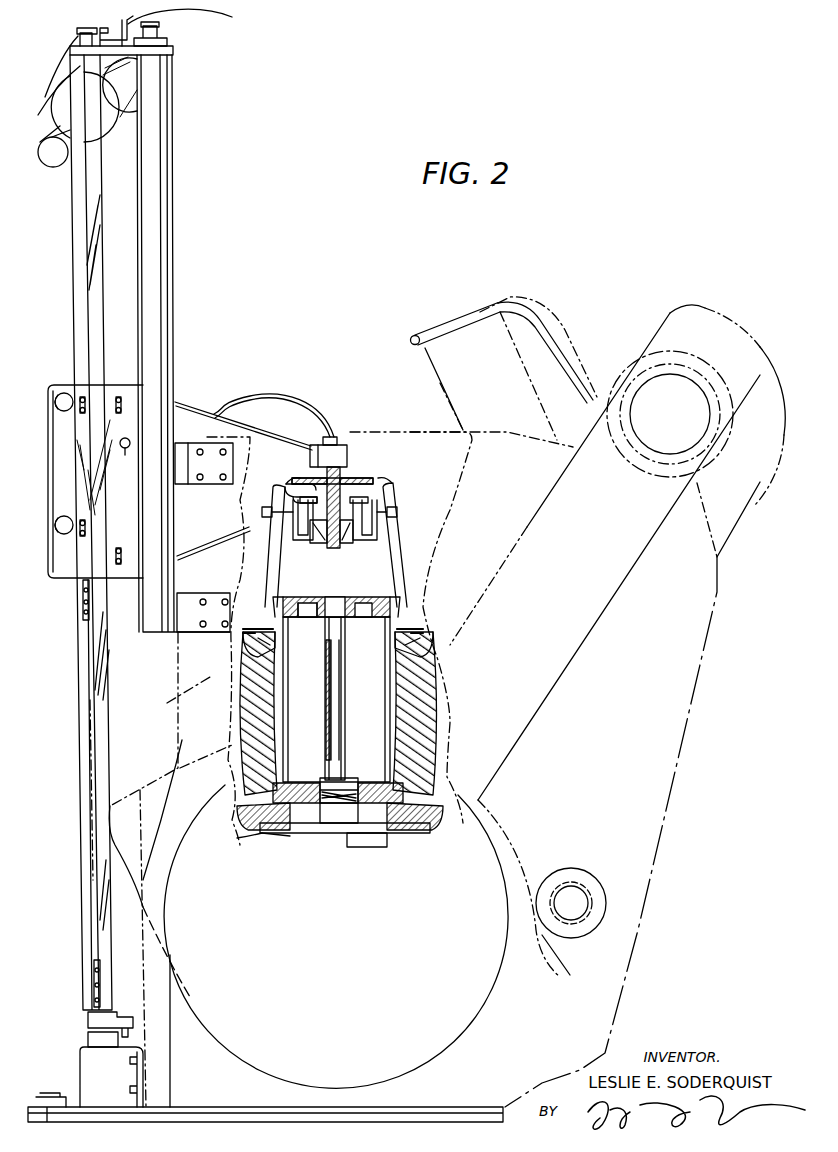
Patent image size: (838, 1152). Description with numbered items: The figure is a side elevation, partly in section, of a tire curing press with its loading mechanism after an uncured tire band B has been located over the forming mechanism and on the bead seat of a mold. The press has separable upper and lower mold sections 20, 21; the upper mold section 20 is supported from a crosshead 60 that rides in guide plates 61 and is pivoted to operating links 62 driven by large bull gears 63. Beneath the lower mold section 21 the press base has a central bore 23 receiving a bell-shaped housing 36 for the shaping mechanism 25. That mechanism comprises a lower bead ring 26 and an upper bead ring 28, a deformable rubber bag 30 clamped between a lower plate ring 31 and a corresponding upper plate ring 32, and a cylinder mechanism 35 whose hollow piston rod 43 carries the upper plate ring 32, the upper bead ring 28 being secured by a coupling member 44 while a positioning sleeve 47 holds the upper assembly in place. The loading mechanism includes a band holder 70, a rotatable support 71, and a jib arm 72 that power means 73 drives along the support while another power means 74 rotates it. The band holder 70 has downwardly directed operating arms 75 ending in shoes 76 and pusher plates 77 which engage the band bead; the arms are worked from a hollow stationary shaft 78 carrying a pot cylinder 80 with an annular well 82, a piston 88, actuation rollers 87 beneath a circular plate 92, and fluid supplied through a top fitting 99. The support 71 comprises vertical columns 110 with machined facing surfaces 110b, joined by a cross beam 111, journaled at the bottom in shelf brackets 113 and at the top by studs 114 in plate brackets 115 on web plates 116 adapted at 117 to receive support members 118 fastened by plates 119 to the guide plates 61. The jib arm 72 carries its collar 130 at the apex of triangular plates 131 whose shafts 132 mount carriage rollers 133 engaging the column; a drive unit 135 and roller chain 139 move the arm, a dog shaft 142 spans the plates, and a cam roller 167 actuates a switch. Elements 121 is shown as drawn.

The upper mold section 20 is at (463, 373).
The lower mold section 21 is at (245, 840).
The central bore 23 is at (280, 840).
The shaping mechanism 25 is at (297, 690).
The lower bead ring 26 is at (402, 808).
The upper bead ring 28 is at (311, 600).
The bag 30 is at (387, 724).
The plate ring 31 is at (320, 790).
The plate ring 32 is at (342, 626).
The cylinder mechanism 35 is at (354, 771).
The bell-shaped housing 36 is at (352, 847).
The hollow piston rod 43 is at (328, 706).
The coupling member 44 is at (313, 610).
The stacking or positioning sleeve 47 is at (344, 688).
The crosshead 60 is at (733, 490).
The guide plates 61 is at (180, 694).
The operating links 62 is at (567, 670).
The bull gears 63 is at (476, 998).
The band holder 70 is at (371, 458).
The support 71 is at (66, 190).
The jib arm 72 is at (192, 420).
The power means 73 is at (138, 91).
The power means 74 is at (98, 1023).
The operating arms 75 is at (277, 566).
The shoe 76 is at (268, 657).
The pusher plate 77 is at (268, 626).
The hollow stationary shaft 78 is at (336, 540).
The pot cylinder 80 is at (318, 531).
The annular well 82 is at (372, 524).
The actuation rollers 87 is at (362, 480).
The piston 88 is at (380, 501).
The circular plate 92 is at (296, 478).
The top fitting 99 is at (338, 437).
The vertical column 110 is at (72, 313).
The facing surface 110b is at (79, 250).
The cross beam 111 is at (194, 19).
The shelf bracket 113 is at (130, 1080).
The stud 114 is at (47, 80).
The plate bracket 115 is at (42, 113).
The web plate 116 is at (174, 51).
The attachment 117 is at (160, 42).
The support member 118 is at (152, 208).
The plates 119 is at (206, 483).
The block 121 is at (95, 1048).
The collar or block 130 is at (340, 452).
The triangularly shaped plates 131 is at (62, 585).
The shafts 132 is at (86, 398).
The carriage roller 133 is at (58, 410).
The drive unit 135 is at (112, 138).
The roller chain 139 is at (84, 606).
The shaft 142 is at (122, 452).
The upper cam roller 167 is at (80, 30).
The tire band B is at (436, 713).